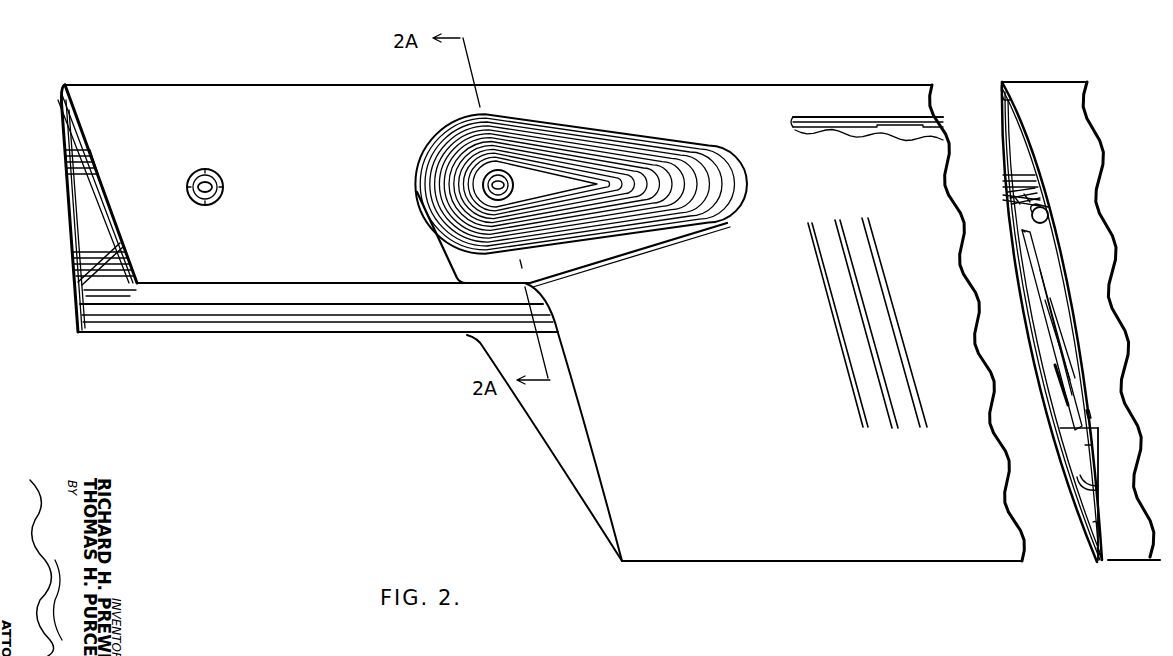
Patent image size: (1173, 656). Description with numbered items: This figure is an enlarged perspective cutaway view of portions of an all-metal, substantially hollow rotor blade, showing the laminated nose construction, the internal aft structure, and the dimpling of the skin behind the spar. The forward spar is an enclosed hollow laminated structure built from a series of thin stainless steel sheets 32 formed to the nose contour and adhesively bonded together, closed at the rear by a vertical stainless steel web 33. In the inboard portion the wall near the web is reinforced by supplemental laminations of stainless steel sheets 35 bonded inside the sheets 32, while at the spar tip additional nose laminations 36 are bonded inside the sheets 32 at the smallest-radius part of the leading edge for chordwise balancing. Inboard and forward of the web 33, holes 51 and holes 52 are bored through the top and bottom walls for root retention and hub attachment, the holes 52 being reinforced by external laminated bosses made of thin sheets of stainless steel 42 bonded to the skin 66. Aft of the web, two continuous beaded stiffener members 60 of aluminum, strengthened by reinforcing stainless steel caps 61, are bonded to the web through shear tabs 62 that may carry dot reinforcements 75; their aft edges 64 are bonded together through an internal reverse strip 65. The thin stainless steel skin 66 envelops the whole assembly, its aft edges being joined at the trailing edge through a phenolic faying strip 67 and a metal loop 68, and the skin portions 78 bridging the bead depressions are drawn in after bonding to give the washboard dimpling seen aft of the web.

The stainless steel sheets 32 is at (58, 124).
The vertical web 33 is at (80, 270).
The supplemental laminations of stainless steel sheets 35 is at (103, 203).
The additional nose laminations 36 is at (997, 87).
The sheets of stainless steel 42 is at (647, 168).
The holes 51 is at (222, 180).
The holes 52 is at (517, 180).
The beaded stiffener members 60 is at (1062, 335).
The reinforcing stainless steel caps 61 is at (1038, 283).
The shear tabs 62 is at (1050, 210).
The aft edges 64 is at (1098, 488).
The internal reverse strip 65 is at (1092, 445).
The skin 66 is at (737, 543).
The faying strip 67 is at (1100, 553).
The metal loop 68 is at (1096, 524).
The dot reinforcements 75 is at (1023, 198).
The skin portions 78 is at (865, 380).